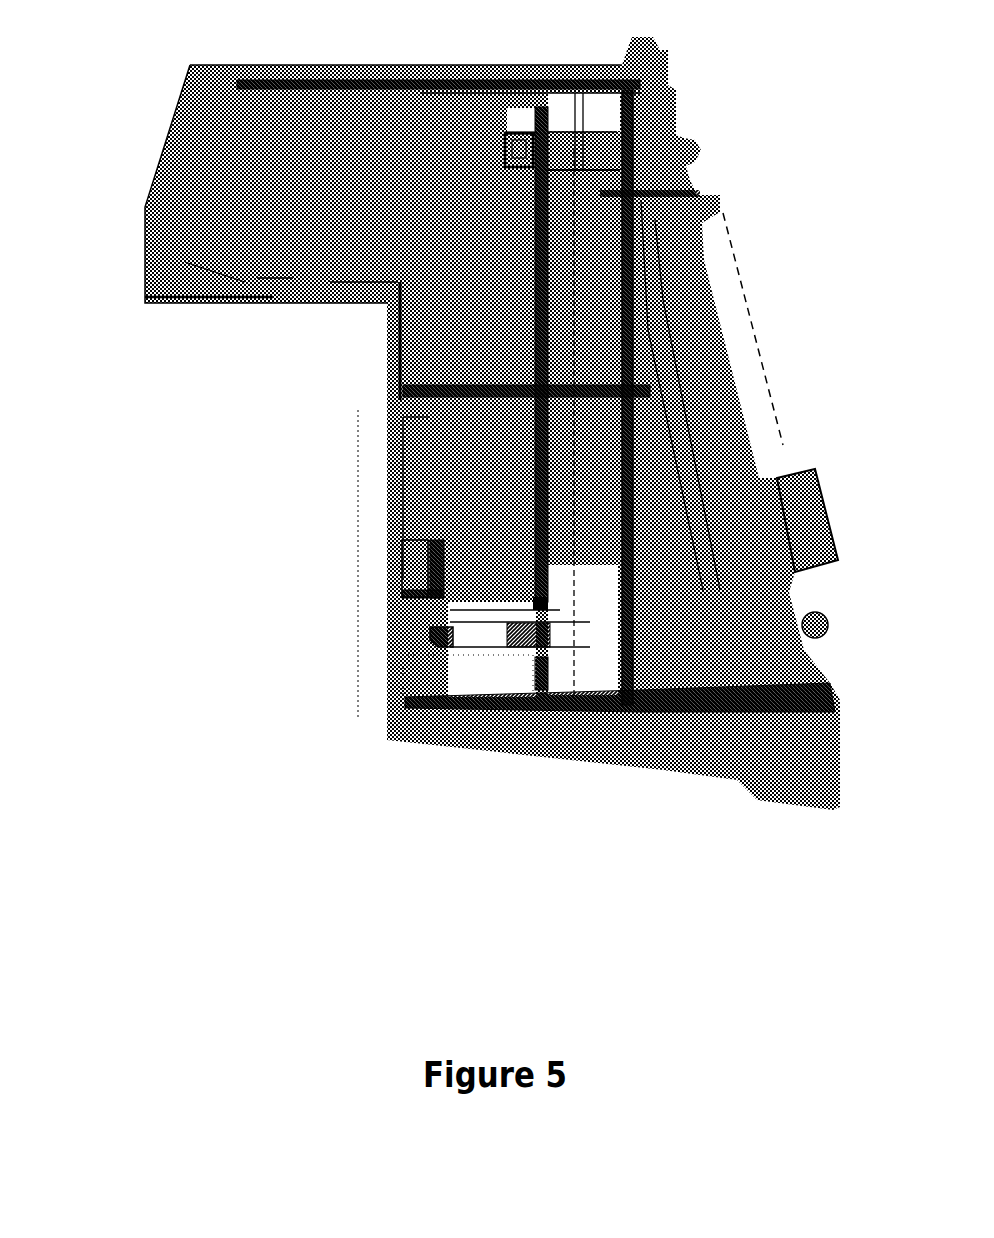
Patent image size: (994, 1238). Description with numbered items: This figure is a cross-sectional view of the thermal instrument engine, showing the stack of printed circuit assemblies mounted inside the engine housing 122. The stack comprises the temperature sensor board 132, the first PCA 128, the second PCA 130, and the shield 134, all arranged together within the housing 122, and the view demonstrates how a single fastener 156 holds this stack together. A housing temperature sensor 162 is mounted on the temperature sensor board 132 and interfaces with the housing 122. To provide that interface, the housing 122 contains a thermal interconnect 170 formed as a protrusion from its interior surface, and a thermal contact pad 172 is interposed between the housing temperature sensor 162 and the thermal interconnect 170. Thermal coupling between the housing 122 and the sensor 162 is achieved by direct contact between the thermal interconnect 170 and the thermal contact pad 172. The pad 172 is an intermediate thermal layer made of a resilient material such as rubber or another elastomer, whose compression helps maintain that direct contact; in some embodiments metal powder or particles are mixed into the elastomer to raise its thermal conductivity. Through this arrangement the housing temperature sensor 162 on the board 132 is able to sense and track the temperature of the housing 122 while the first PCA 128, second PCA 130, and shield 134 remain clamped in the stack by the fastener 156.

The engine housing 122 is at (367, 184).
The fastener 156 is at (512, 138).
The housing temperature sensor 162 is at (440, 548).
The thermal interconnect 170 is at (413, 557).
The thermal contact pad 172 is at (407, 597).
The temperature sensor board 132 is at (455, 680).
The first PCA 128 is at (535, 700).
The shield 134 is at (577, 705).
The second PCA 130 is at (627, 652).